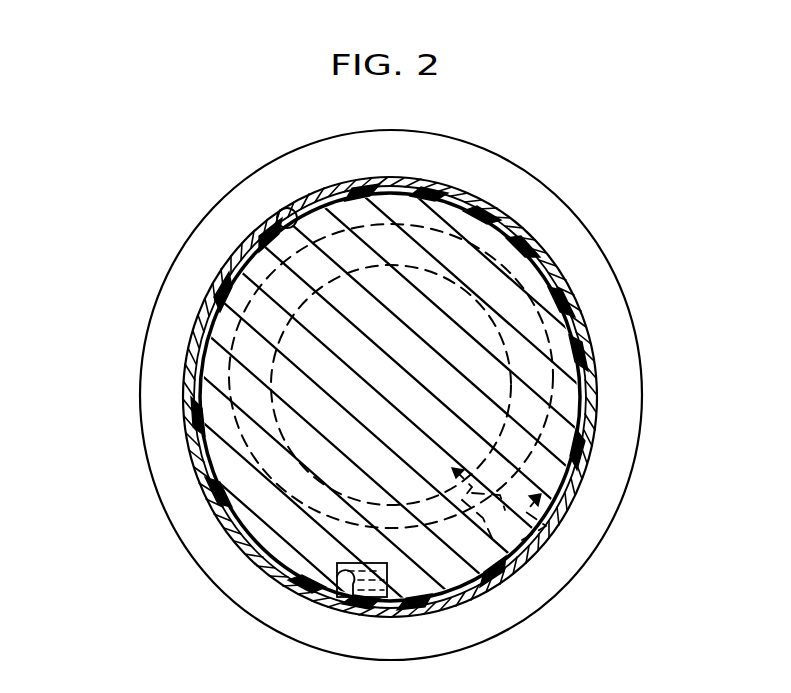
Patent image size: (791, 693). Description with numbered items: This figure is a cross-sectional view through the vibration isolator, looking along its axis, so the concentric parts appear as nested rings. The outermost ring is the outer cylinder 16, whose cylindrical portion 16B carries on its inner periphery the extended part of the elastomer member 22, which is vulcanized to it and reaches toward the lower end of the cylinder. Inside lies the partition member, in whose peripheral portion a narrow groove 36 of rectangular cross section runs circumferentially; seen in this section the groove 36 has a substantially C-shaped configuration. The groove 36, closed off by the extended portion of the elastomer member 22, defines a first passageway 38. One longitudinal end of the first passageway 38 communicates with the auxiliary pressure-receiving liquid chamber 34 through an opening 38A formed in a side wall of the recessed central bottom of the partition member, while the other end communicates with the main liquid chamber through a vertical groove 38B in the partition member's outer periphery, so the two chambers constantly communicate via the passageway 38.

The outer cylinder 16 is at (184, 352).
The cylindrical portion 16B is at (203, 307).
The elastomer member 22 is at (290, 207).
The auxiliary pressure-receiving liquid chamber 34 is at (468, 378).
The narrow groove 36 is at (193, 470).
The first passageway 38 is at (240, 540).
The opening 38A is at (537, 560).
The vertical groove 38B is at (360, 607).